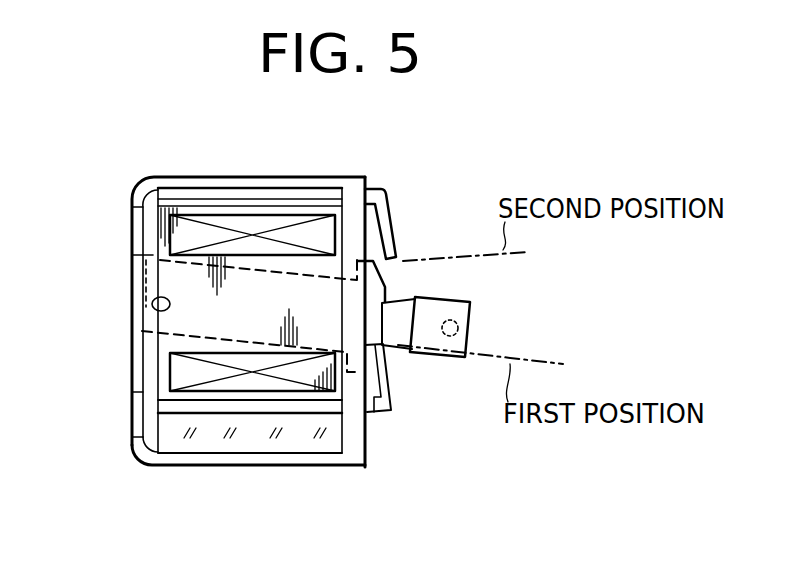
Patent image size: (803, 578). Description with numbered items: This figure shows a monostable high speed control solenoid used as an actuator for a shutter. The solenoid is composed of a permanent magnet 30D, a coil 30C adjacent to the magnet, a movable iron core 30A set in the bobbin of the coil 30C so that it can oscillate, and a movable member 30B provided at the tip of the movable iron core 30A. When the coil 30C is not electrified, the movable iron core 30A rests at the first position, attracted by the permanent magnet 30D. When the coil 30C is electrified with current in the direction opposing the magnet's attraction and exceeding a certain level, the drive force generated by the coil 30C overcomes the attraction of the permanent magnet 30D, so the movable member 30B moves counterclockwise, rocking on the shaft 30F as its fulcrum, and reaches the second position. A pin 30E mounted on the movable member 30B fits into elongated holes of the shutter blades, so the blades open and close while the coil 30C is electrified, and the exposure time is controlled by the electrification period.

The movable iron core 30A is at (387, 292).
The movable member 30B is at (437, 357).
The coil 30C is at (284, 226).
The permanent magnet 30D is at (285, 438).
The pin 30E is at (457, 323).
The shaft 30F is at (158, 312).